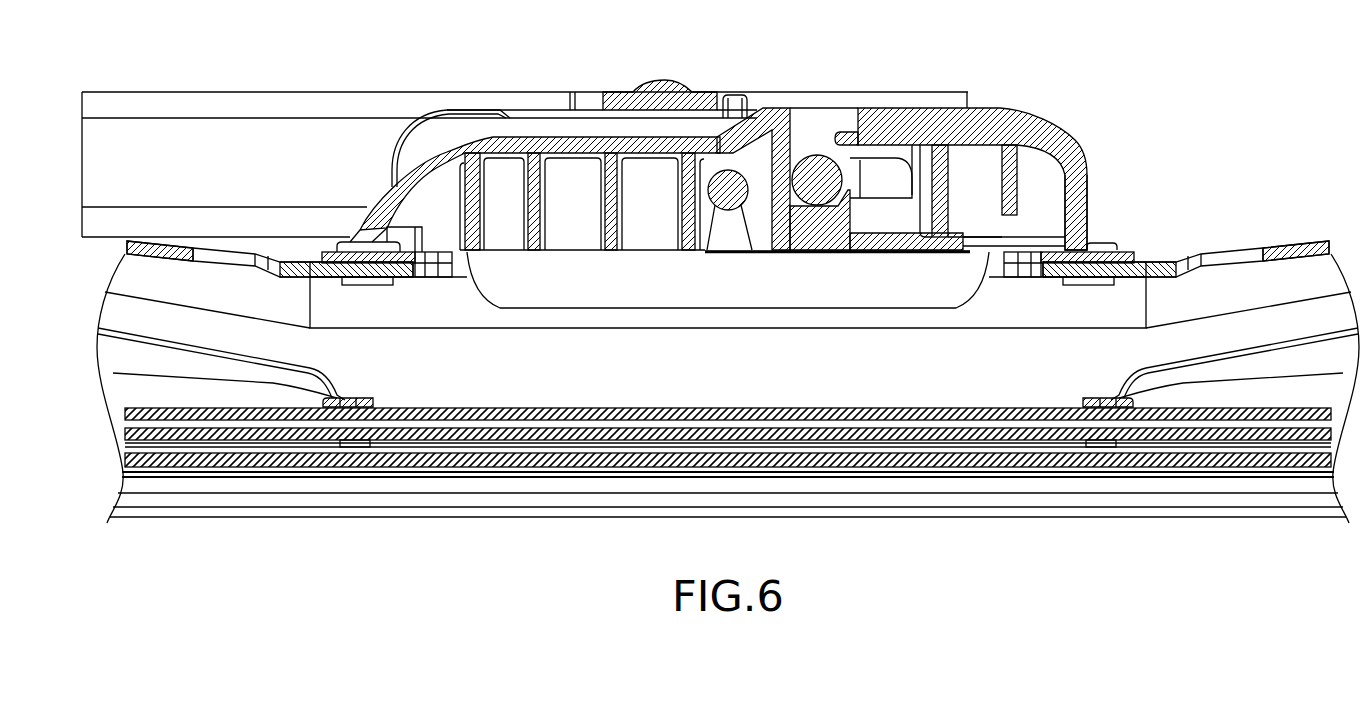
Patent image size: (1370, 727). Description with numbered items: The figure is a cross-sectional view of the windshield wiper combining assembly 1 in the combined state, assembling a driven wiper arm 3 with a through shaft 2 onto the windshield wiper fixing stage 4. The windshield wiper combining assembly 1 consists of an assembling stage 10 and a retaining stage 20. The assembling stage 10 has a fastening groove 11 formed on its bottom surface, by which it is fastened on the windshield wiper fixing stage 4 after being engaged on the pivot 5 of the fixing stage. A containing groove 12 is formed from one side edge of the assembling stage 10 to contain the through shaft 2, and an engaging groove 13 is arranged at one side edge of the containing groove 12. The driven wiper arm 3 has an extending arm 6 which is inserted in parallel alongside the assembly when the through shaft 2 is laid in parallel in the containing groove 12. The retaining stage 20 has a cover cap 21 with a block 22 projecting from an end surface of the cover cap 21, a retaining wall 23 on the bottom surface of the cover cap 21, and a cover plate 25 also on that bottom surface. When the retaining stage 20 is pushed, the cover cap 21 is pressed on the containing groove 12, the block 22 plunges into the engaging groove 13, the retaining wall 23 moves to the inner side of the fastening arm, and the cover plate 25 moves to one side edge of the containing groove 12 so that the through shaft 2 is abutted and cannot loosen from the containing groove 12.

The windshield wiper combining assembly 1 is at (1112, 148).
The through shaft 2 is at (822, 158).
The driven wiper arm 3 is at (207, 95).
The windshield wiper fixing stage 4 is at (347, 242).
The pivot 5 is at (728, 190).
The extending arm 6 is at (627, 93).
The assembling stage 10 is at (553, 140).
The fastening groove 11 is at (707, 182).
The containing groove 12 is at (803, 143).
The engaging groove 13 is at (780, 137).
The retaining stage 20 is at (1087, 187).
The cover cap 21 is at (968, 128).
The block 22 is at (843, 137).
The retaining wall 23 is at (957, 173).
The cover plate 25 is at (900, 123).